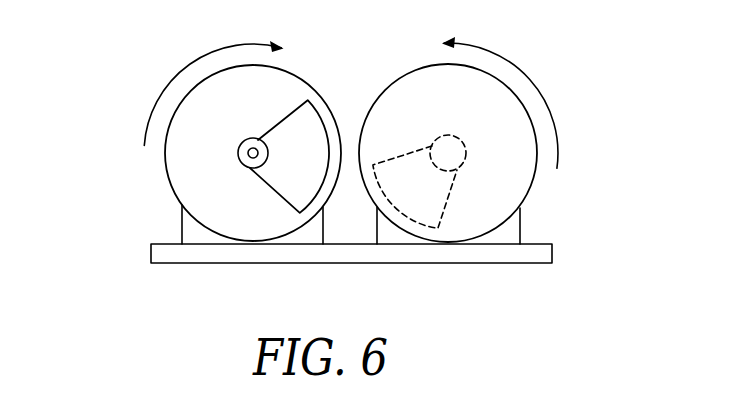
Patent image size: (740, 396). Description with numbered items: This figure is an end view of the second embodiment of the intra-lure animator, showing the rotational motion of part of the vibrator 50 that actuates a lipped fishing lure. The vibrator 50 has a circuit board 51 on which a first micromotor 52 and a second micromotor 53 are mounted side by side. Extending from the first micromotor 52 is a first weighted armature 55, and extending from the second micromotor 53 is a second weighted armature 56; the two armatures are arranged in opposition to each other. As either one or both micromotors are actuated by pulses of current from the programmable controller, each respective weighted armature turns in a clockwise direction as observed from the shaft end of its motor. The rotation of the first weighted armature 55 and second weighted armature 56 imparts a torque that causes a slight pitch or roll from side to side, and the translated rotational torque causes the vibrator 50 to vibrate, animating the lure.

The vibrator 50 is at (325, 159).
The circuit board 51 is at (151, 256).
The first micromotor 52 is at (182, 220).
The second micromotor 53 is at (522, 230).
The first weighted armature 55 is at (316, 103).
The second weighted armature 56 is at (395, 155).